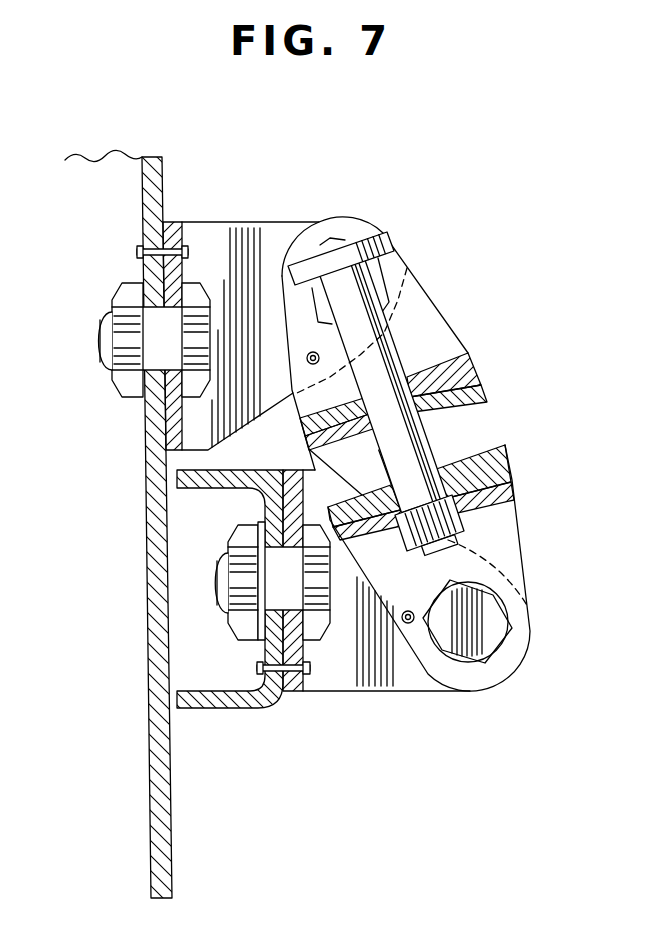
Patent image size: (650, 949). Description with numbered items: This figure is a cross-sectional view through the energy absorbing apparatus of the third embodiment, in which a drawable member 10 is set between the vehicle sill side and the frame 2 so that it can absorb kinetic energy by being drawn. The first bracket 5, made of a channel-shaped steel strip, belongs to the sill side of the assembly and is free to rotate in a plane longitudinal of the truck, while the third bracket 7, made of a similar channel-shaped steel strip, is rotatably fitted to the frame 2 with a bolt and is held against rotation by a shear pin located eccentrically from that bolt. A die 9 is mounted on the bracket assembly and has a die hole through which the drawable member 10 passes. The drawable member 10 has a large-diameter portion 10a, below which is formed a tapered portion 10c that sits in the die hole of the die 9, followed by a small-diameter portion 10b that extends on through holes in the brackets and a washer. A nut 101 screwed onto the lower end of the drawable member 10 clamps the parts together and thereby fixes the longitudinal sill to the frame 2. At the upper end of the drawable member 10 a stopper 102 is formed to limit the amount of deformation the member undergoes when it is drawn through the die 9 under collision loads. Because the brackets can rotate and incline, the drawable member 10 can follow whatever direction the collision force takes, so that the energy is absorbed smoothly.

The frame 2 is at (152, 776).
The first bracket 5 is at (272, 235).
The third bracket 7 is at (390, 680).
The die 9 is at (472, 372).
The drawable member 10 is at (397, 355).
The large-diameter portion 10a is at (400, 283).
The small-diameter portion 10b is at (398, 453).
The tapered portion 10c is at (415, 422).
The nut 101 is at (458, 520).
The stopper 102 is at (376, 232).